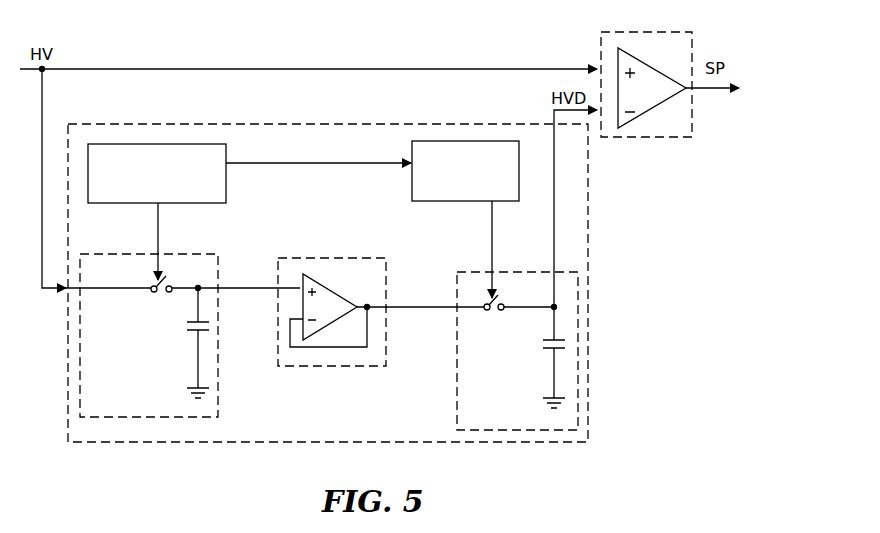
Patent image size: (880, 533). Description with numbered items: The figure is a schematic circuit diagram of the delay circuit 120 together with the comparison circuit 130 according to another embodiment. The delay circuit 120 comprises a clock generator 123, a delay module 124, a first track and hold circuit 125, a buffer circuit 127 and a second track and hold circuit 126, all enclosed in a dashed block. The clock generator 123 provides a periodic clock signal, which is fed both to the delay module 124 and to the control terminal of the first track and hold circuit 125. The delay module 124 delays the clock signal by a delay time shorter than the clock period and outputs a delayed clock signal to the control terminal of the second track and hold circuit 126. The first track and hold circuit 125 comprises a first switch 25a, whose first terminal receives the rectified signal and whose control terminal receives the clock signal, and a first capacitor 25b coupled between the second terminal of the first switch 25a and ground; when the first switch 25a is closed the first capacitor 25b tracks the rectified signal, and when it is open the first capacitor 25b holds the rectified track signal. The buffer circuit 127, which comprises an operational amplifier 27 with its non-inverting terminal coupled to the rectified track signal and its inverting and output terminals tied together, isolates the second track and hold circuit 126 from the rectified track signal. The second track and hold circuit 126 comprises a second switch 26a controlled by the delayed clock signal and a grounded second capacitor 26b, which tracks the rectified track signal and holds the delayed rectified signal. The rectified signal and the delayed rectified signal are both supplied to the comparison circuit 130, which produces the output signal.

The delay circuit 120 is at (285, 124).
The clock generator 123 is at (220, 203).
The delay module 124 is at (508, 201).
The first track and hold circuit 125 is at (190, 335).
The first switch 25a is at (152, 299).
The first capacitor 25b is at (181, 328).
The buffer circuit 127 is at (330, 367).
The operational amplifier 27 is at (340, 316).
The second track and hold circuit 126 is at (517, 351).
The second switch 26a is at (495, 318).
The second capacitor 26b is at (538, 346).
The comparison circuit 130 is at (620, 32).